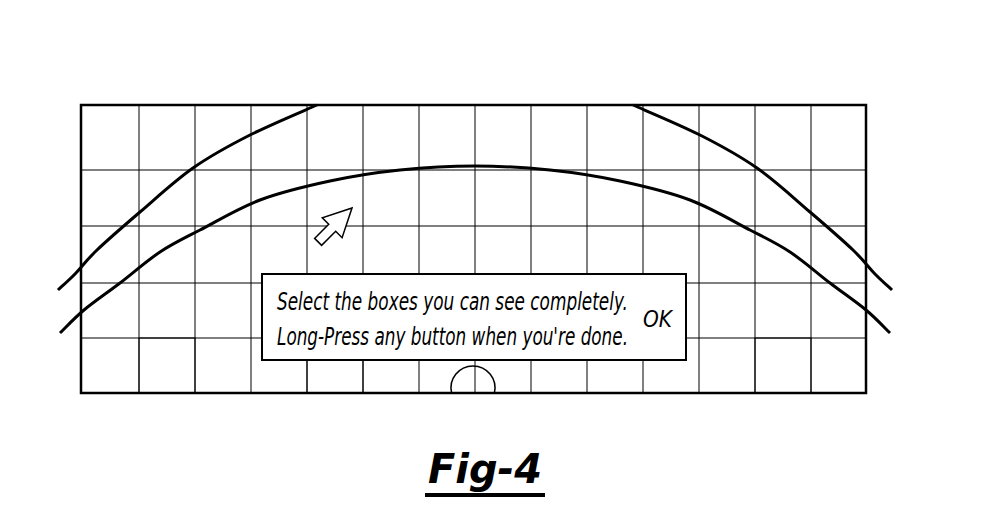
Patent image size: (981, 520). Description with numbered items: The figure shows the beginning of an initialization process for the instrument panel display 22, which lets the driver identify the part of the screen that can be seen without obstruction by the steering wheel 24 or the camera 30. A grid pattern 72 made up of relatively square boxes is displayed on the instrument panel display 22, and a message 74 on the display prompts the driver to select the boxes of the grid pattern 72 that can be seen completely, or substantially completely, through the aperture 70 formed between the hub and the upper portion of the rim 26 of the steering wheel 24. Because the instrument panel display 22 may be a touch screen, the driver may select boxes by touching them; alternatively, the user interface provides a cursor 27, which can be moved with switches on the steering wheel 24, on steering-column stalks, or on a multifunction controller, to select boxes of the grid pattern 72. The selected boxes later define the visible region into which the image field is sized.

The instrument panel display 22 is at (222, 105).
The steering wheel 24 is at (717, 141).
The rim 26 is at (475, 127).
The cursor 27 is at (337, 212).
The camera 30 is at (478, 390).
The aperture 70 is at (168, 357).
The grid pattern 72 is at (777, 353).
The message 74 is at (335, 358).